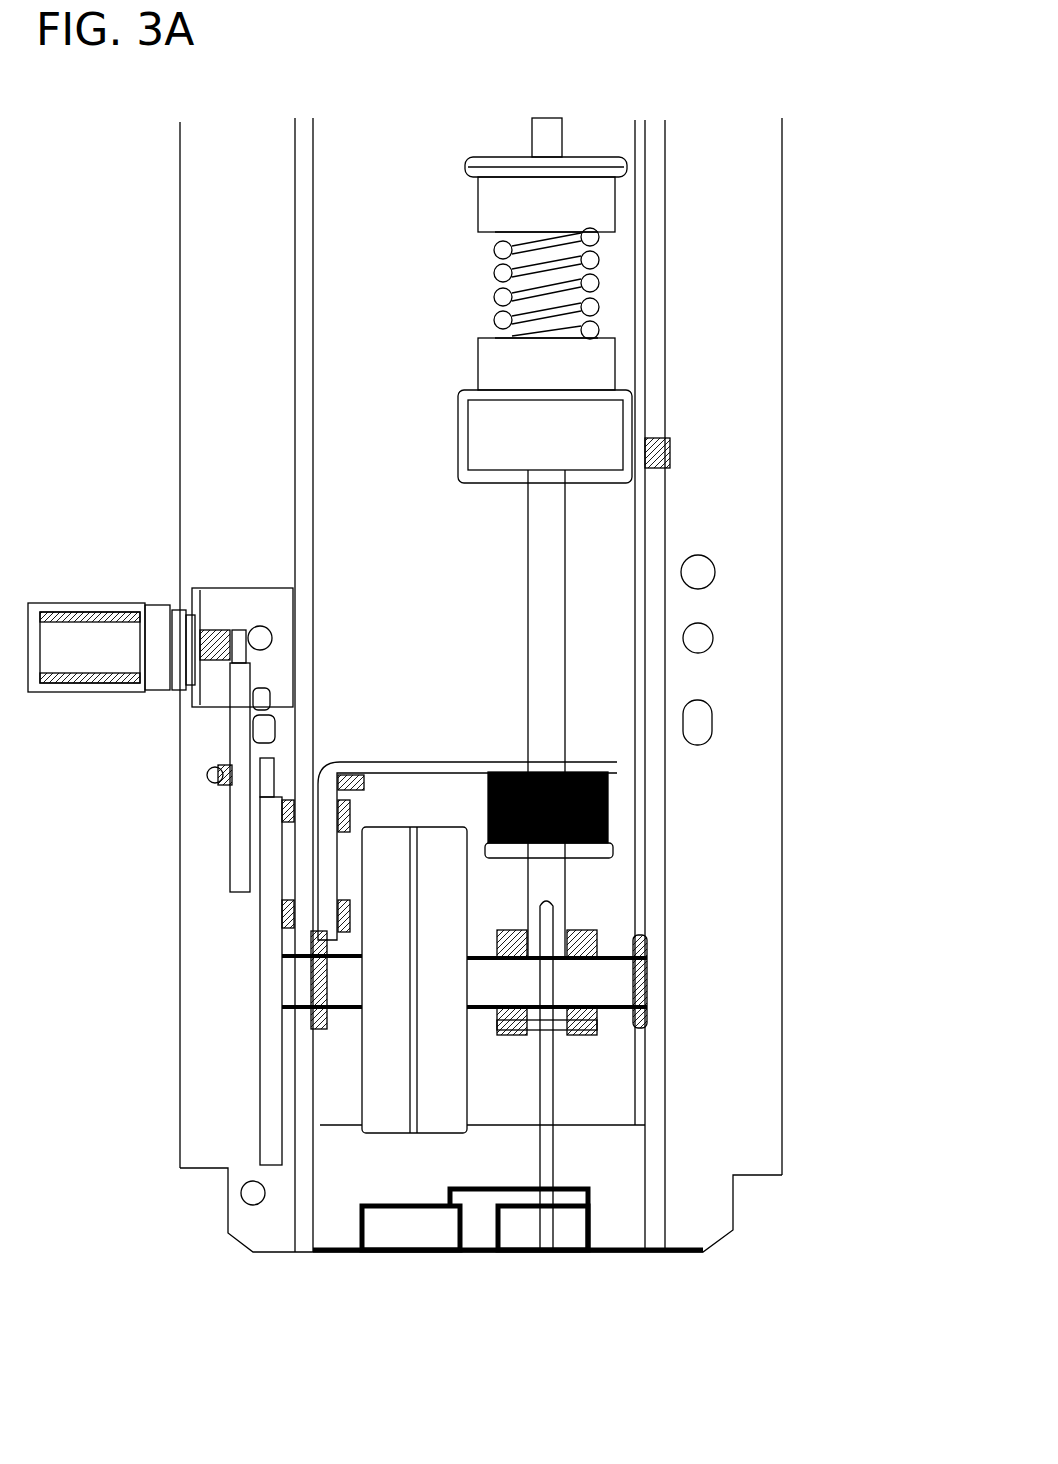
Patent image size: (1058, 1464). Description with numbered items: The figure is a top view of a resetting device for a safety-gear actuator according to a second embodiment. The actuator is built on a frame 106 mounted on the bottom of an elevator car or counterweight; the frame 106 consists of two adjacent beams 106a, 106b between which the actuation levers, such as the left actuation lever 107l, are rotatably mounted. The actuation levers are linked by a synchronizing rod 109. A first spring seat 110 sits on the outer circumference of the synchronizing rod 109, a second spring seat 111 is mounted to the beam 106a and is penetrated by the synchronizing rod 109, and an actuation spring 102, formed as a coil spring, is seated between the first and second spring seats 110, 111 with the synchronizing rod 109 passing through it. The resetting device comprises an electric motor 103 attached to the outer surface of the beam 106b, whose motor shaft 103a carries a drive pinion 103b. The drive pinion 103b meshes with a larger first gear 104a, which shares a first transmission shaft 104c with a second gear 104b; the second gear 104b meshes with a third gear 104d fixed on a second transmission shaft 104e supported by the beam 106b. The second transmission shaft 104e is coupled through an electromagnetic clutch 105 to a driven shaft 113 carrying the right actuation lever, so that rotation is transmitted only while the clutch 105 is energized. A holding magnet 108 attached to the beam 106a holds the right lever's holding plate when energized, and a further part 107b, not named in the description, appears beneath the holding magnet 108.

The actuation spring 102 is at (500, 290).
The electric motor 103 is at (100, 635).
The motor shaft 103a is at (215, 645).
The drive pinion 103b is at (240, 640).
The first gear 104a is at (235, 740).
The second gear 104b is at (258, 805).
The first transmission shaft 104c is at (218, 783).
The third gear 104d is at (270, 965).
The second transmission shaft 104e is at (345, 1000).
The electromagnetic clutch 105 is at (440, 1105).
The frame 106 is at (270, 152).
The beam 106a is at (705, 298).
The beam 106b is at (207, 328).
The lower plate 107b is at (615, 850).
The left actuation lever 107l is at (545, 1070).
The holding magnet 108 is at (610, 780).
The synchronizing rod 109 is at (540, 555).
The first spring seat 110 is at (600, 200).
The second spring seat 111 is at (590, 372).
The driven shaft 113 is at (500, 988).